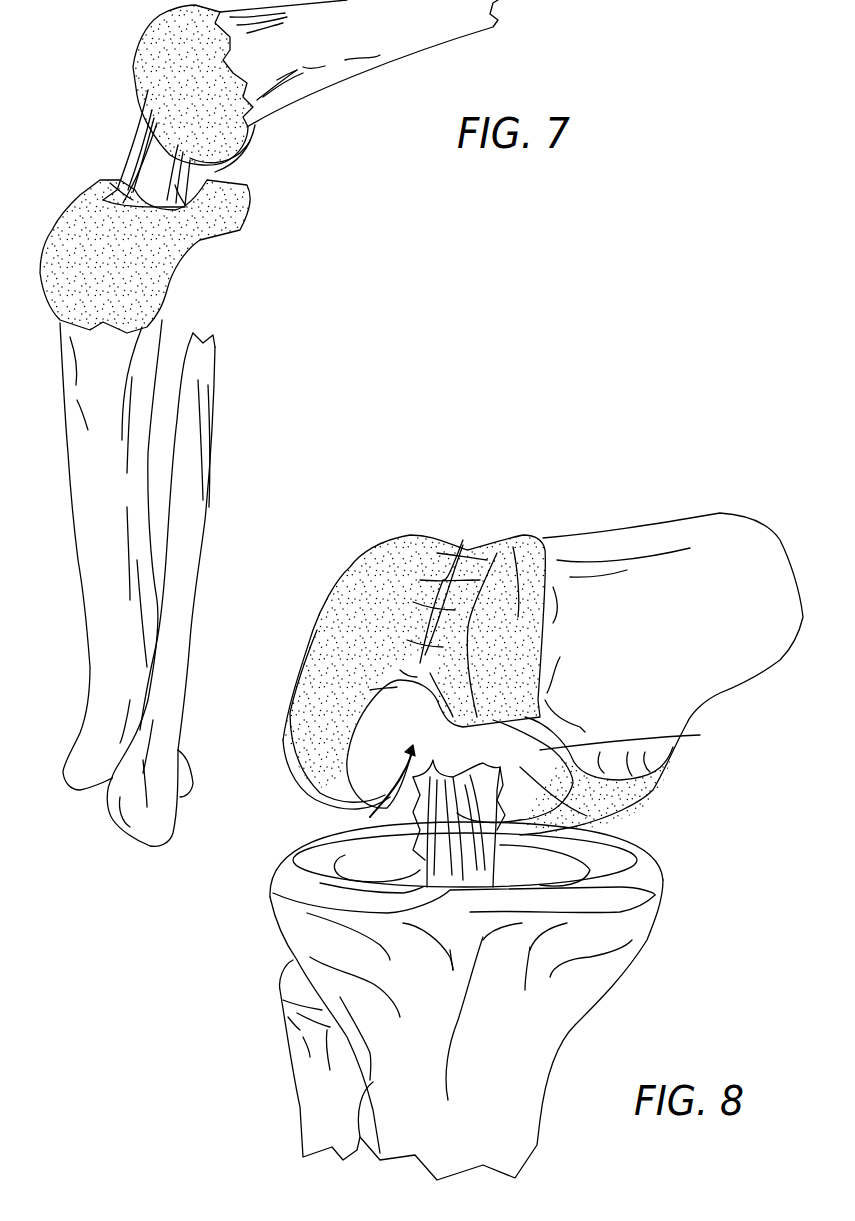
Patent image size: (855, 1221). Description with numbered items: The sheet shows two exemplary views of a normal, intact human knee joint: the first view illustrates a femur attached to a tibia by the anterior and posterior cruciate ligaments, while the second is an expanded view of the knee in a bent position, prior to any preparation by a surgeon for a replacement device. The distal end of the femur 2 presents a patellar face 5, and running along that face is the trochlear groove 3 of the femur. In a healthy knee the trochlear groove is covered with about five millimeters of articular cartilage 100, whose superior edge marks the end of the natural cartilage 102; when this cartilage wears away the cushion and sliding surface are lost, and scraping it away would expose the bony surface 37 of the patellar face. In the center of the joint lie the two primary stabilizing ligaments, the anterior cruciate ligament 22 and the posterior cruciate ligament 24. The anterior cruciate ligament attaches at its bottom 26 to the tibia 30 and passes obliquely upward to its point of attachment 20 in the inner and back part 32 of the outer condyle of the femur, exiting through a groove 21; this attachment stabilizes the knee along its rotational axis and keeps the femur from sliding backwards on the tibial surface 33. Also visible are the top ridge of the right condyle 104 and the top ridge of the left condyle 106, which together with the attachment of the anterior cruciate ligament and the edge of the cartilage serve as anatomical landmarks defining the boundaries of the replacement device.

In FIG. 8, the femur 2 is at (725, 708).
In FIG. 8, the trochlear groove 3 is at (433, 593).
In FIG. 8, the patellar face 5 is at (375, 612).
In FIG. 8, the point of attachment of the anterior cruciate ligament 20 is at (520, 813).
In FIG. 8, the groove where the ACL exits 21 is at (405, 708).
In FIG. 7, the anterior cruciate ligament 22 is at (110, 185).
In FIG. 8, the anterior cruciate ligament 22 is at (450, 870).
In FIG. 7, the posterior cruciate ligament 24 is at (175, 185).
In FIG. 8, the posterior cruciate ligament 24 is at (470, 825).
In FIG. 8, the bottom of the anterior cruciate ligament 26 is at (430, 900).
In FIG. 8, the tibia 30 is at (537, 1045).
In FIG. 7, the inner and back part of the outer condyle 32 is at (130, 115).
In FIG. 8, the inner and back part of the outer condyle 32 is at (440, 808).
In FIG. 8, the tibial surface 33 is at (318, 879).
In FIG. 8, the bony surface 37 is at (520, 840).
In FIG. 8, the articular cartilage 100 is at (463, 545).
In FIG. 8, the natural cartilage 102 is at (503, 538).
In FIG. 8, the top ridge of the right condyle 104 is at (285, 757).
In FIG. 8, the top ridge of the left condyle 106 is at (540, 750).